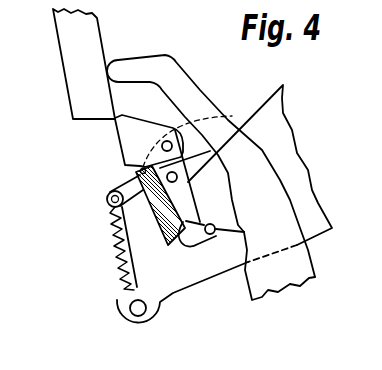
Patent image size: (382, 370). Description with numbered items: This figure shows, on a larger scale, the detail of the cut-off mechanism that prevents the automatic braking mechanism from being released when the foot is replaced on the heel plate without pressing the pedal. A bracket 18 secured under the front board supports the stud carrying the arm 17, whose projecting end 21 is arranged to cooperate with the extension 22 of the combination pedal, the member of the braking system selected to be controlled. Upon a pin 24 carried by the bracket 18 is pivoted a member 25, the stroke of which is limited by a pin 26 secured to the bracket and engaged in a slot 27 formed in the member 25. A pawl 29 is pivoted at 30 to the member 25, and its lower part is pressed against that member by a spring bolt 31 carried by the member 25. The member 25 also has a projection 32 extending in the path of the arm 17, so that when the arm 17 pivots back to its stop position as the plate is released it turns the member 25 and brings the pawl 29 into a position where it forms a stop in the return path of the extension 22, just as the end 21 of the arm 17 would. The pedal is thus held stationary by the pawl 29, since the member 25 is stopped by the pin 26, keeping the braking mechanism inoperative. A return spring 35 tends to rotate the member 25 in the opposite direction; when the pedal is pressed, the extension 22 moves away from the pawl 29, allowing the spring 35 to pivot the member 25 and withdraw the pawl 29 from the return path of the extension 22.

The arm 17 is at (279, 213).
The bracket 18 is at (172, 276).
The projecting end 21 is at (114, 72).
The extension 22 is at (83, 80).
The pin 24 is at (178, 176).
The member 25 is at (193, 199).
The pin 26 is at (212, 234).
The slot 27 is at (197, 236).
The pawl 29 is at (138, 132).
The pivot 30 is at (162, 147).
The spring bolt 31 is at (139, 172).
The projection 32 is at (245, 232).
The return spring 35 is at (118, 262).